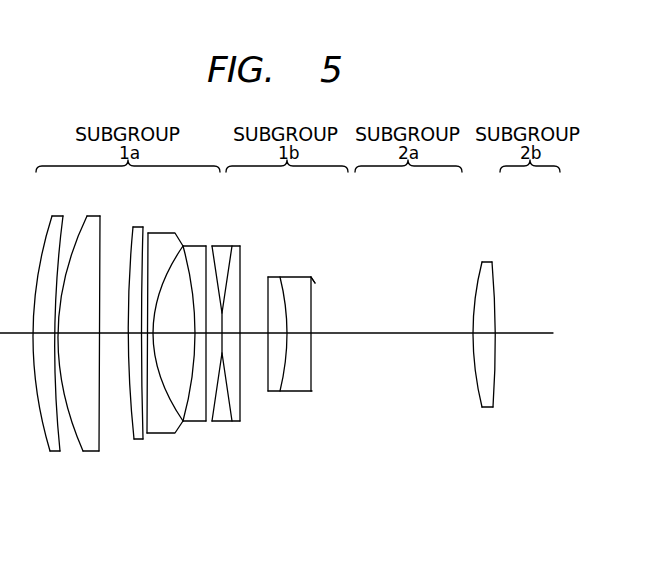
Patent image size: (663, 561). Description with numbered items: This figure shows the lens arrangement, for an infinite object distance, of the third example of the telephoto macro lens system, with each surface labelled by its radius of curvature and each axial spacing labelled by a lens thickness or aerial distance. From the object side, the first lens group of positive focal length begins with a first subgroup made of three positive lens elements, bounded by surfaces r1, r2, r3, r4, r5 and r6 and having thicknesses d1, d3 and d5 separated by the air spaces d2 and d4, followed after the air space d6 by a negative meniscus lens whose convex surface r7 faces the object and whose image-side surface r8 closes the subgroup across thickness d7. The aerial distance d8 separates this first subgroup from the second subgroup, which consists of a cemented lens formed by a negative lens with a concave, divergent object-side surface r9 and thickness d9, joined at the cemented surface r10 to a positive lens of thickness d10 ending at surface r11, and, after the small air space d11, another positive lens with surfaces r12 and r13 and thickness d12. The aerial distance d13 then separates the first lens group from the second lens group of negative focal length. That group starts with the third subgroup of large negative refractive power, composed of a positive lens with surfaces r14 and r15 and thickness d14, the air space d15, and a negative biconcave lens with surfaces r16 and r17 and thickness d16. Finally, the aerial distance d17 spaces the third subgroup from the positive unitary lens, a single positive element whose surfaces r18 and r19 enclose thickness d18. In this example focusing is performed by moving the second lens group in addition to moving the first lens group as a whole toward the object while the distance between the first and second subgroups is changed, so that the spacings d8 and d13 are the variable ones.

The first lens surface r1 is at (52, 216).
The second lens surface r2 is at (63, 216).
The third lens surface r3 is at (87, 216).
The fourth lens surface r4 is at (100, 216).
The fifth lens surface r5 is at (133, 227).
The sixth lens surface r6 is at (143, 227).
The seventh lens surface r7 is at (148, 233).
The eighth lens surface r8 is at (181, 246).
The ninth lens surface r9 is at (193, 246).
The tenth lens surface r10 is at (205, 246).
The eleventh lens surface r11 is at (213, 246).
The twelfth lens surface r12 is at (231, 246).
The thirteenth lens surface r13 is at (241, 246).
The fourteenth lens surface r14 is at (268, 277).
The fifteenth lens surface r15 is at (280, 277).
The sixteenth lens surface r16 is at (300, 277).
The seventeenth lens surface r17 is at (315, 283).
The eighteenth lens surface r18 is at (483, 262).
The nineteenth lens surface r19 is at (492, 262).
The lens thickness d1 is at (40, 335).
The aerial distance d2 is at (63, 335).
The lens thickness d3 is at (73, 335).
The aerial distance d4 is at (112, 335).
The lens thickness d5 is at (135, 335).
The aerial distance d6 is at (158, 335).
The lens thickness d7 is at (177, 335).
The aerial distance d8 is at (200, 422).
The lens thickness d9 is at (218, 422).
The lens thickness d10 is at (238, 422).
The aerial distance d11 is at (252, 335).
The lens thickness d12 is at (276, 392).
The aerial distance d13 is at (296, 392).
The lens thickness d14 is at (281, 335).
The aerial distance d15 is at (297, 335).
The lens thickness d16 is at (433, 335).
The aerial distance d17 is at (483, 407).
The lens thickness d18 is at (493, 407).